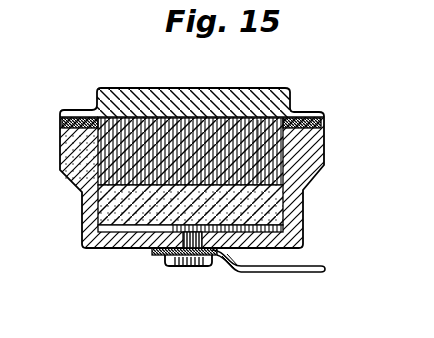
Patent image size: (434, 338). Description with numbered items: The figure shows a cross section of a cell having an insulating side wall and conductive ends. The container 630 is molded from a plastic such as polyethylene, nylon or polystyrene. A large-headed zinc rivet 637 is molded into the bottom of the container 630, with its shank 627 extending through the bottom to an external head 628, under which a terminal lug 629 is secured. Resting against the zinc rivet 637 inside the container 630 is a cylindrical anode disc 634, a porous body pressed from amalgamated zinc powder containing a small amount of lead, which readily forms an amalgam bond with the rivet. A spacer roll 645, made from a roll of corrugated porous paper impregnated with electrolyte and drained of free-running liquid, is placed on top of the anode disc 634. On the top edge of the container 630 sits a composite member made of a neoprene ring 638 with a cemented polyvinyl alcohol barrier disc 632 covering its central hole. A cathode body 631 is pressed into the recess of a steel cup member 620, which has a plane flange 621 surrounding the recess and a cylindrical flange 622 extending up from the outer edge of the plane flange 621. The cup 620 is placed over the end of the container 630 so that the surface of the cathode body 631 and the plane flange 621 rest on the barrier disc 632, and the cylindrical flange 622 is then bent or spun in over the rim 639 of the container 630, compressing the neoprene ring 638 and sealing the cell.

The steel cup member 620 is at (212, 98).
The plane flange 621 is at (318, 112).
The cylindrical flange 622 is at (325, 137).
The shank 627 is at (178, 262).
The external head 628 is at (210, 266).
The terminal lug 629 is at (306, 274).
The container 630 is at (82, 222).
The cathode body 631 is at (248, 100).
The barrier disc 632 is at (151, 72).
The anode disc 634 is at (260, 210).
The zinc rivet 637 is at (280, 230).
The neoprene ring 638 is at (62, 122).
The rim 639 is at (77, 151).
The spacer roll 645 is at (258, 158).